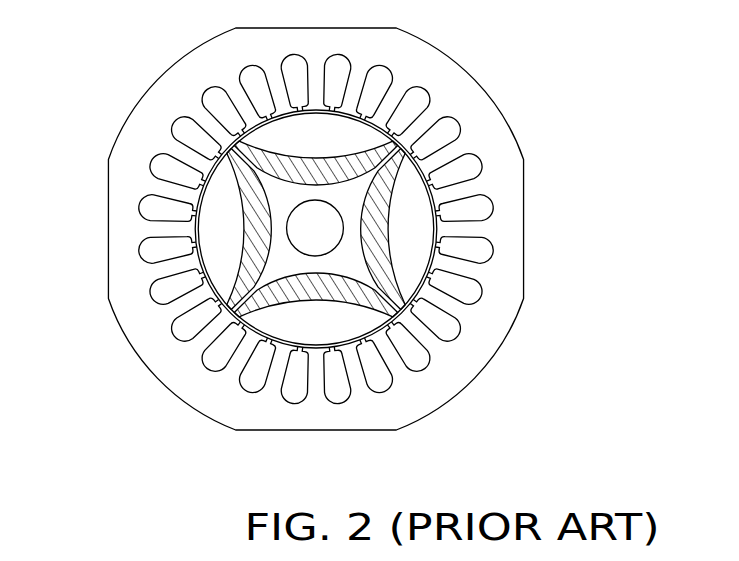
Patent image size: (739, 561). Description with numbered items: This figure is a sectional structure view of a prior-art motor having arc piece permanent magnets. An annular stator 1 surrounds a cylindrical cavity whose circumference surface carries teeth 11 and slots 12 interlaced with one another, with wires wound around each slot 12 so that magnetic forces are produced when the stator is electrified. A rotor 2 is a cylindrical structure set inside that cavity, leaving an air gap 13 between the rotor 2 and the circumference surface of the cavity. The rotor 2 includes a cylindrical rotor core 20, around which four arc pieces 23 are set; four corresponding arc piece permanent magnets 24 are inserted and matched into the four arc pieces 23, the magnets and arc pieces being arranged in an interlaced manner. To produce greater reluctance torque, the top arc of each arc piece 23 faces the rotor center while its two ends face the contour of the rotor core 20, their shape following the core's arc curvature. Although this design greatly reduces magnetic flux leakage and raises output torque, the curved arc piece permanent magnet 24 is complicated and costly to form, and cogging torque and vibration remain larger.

The annular stator 1 is at (477, 100).
The tooth 11 is at (447, 158).
The slot 12 is at (480, 168).
The air gap 13 is at (430, 345).
The rotor core 20 is at (205, 229).
The arc piece 23 is at (417, 80).
The arc piece permanent magnet 24 is at (377, 238).
The rotor 2 is at (316, 332).